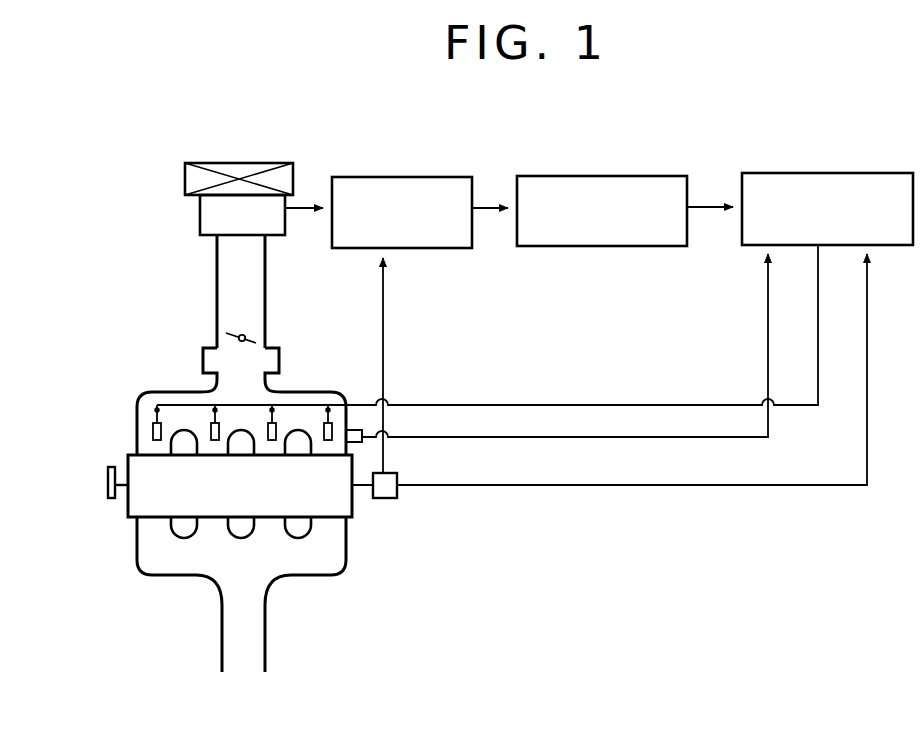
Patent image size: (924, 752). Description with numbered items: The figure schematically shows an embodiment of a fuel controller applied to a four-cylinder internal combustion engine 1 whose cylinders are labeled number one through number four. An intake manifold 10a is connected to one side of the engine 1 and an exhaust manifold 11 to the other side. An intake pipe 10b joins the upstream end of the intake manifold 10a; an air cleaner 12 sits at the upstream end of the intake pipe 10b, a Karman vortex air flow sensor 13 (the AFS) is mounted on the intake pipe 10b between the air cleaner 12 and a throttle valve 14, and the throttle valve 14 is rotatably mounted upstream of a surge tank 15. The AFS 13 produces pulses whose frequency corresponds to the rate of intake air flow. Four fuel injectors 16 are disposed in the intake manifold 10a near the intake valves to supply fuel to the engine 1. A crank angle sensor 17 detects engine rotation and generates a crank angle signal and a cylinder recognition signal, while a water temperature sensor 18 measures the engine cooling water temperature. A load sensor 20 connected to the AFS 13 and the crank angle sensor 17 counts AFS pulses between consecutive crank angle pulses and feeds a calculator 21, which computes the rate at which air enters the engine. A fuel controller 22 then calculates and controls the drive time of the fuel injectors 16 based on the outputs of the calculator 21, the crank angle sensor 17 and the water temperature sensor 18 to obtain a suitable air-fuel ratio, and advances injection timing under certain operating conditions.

The internal combustion engine 1 is at (352, 506).
The intake manifold 10a is at (162, 391).
The intake pipe 10b is at (217, 285).
The exhaust manifold 11 is at (346, 542).
The air cleaner 12 is at (185, 180).
The Karman vortex air flow sensor 13 is at (200, 216).
The throttle valve 14 is at (256, 340).
The surge tank 15 is at (203, 360).
The fuel injectors 16 is at (150, 435).
The crank angle sensor 17 is at (397, 474).
The water temperature sensor 18 is at (358, 430).
The load sensor 20 is at (407, 177).
The calculator 21 is at (610, 176).
The fuel controller 22 is at (840, 173).